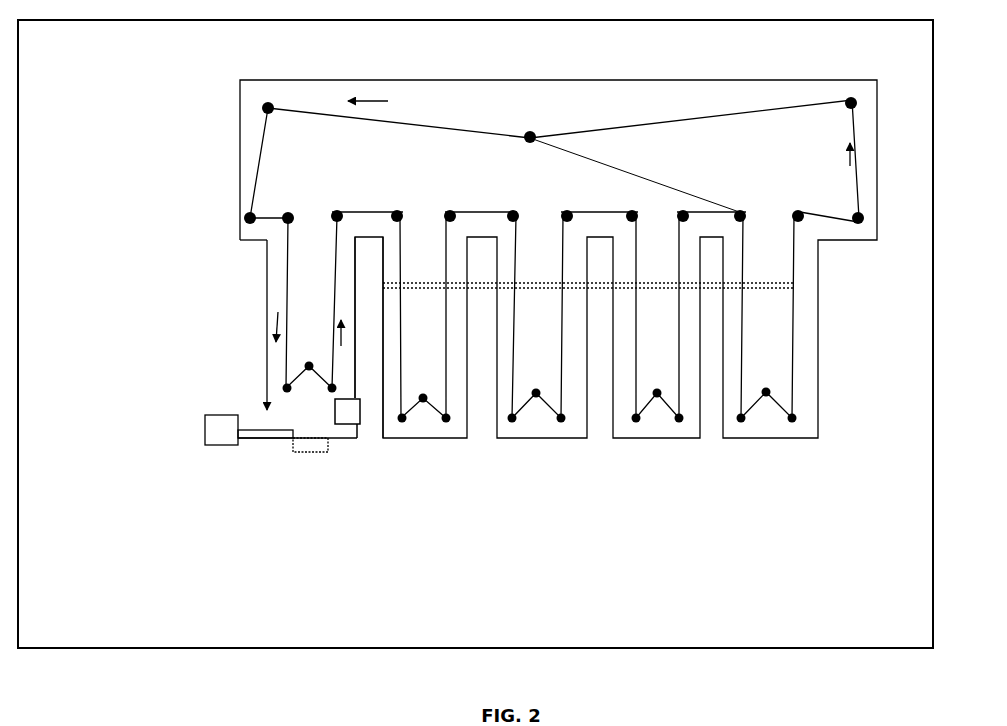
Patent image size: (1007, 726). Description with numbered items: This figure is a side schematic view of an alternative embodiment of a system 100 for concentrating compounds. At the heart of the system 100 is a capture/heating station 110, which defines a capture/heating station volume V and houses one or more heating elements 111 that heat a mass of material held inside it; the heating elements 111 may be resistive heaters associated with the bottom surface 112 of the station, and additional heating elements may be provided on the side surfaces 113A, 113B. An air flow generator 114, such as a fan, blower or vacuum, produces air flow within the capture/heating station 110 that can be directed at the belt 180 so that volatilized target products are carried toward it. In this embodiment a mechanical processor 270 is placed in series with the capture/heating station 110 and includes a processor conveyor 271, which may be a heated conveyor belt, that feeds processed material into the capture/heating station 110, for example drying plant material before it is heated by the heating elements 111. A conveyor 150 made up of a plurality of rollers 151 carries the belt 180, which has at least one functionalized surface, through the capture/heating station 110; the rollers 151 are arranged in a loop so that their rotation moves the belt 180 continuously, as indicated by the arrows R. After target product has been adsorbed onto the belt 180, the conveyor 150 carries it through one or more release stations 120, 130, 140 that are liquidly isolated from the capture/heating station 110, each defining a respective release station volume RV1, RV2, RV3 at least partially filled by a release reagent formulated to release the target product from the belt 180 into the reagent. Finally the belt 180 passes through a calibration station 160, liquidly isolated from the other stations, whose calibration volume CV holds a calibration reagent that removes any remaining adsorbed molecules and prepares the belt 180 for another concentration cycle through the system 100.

The system 100 is at (587, 249).
The capture/heating station 110 is at (254, 378).
The heating element 111 is at (310, 452).
The bottom surface 112 is at (347, 438).
The side surface 113A is at (272, 297).
The side surface 113B is at (357, 280).
The air flow generator 114 is at (360, 423).
The release station 120 is at (436, 444).
The release station 130 is at (548, 444).
The release station 140 is at (657, 444).
The conveyor 150 is at (722, 200).
The roller 151 is at (255, 215).
The calibration station 160 is at (770, 444).
The belt 180 is at (646, 120).
The mechanical processor 270 is at (208, 447).
The processor conveyor 271 is at (260, 437).
The arrows R is at (605, 145).
The capture/heating station volume V is at (277, 277).
The calibration volume CV is at (772, 337).
The release station volume RV1 is at (425, 327).
The release station volume RV2 is at (543, 327).
The release station volume RV3 is at (648, 352).